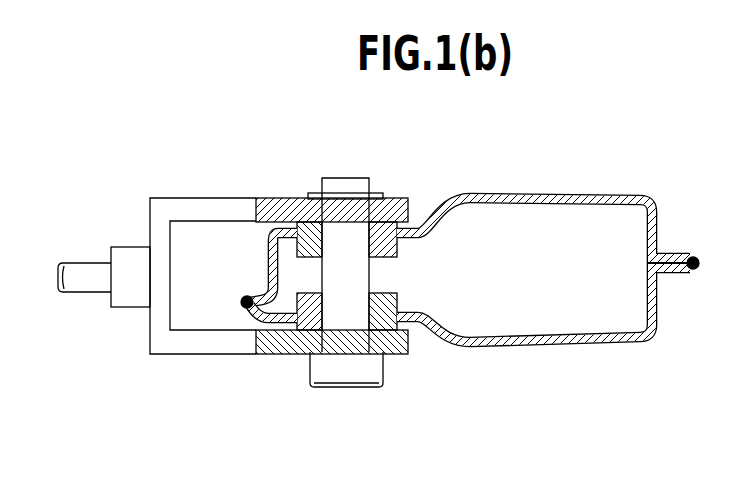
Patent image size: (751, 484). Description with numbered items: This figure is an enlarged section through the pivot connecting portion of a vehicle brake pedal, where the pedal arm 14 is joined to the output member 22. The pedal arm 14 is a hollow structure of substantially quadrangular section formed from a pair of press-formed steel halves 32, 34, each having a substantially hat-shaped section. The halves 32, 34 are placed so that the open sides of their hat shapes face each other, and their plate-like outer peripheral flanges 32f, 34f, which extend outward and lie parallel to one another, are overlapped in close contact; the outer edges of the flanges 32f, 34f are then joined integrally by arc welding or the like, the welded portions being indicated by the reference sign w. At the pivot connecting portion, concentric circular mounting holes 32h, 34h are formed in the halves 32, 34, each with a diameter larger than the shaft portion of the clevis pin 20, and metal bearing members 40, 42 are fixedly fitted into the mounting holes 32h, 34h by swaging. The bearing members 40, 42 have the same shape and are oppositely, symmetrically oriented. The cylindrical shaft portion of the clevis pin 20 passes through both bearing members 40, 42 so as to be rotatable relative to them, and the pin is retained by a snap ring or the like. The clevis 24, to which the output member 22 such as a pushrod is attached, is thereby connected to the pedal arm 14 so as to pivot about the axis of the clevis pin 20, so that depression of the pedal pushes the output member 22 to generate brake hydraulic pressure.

The pedal arm 14 is at (618, 163).
The clevis pin 20 is at (352, 274).
The output member 22 is at (85, 280).
The clevis 24 is at (196, 208).
The half 32 is at (473, 333).
The outer peripheral flange 32f is at (262, 318).
The mounting hole 32h is at (373, 322).
The half 34 is at (465, 224).
The outer peripheral flange 34f is at (262, 290).
The mounting hole 34h is at (337, 207).
The bearing member 40 is at (397, 345).
The bearing member 42 is at (292, 201).
The welded portion w is at (240, 301).